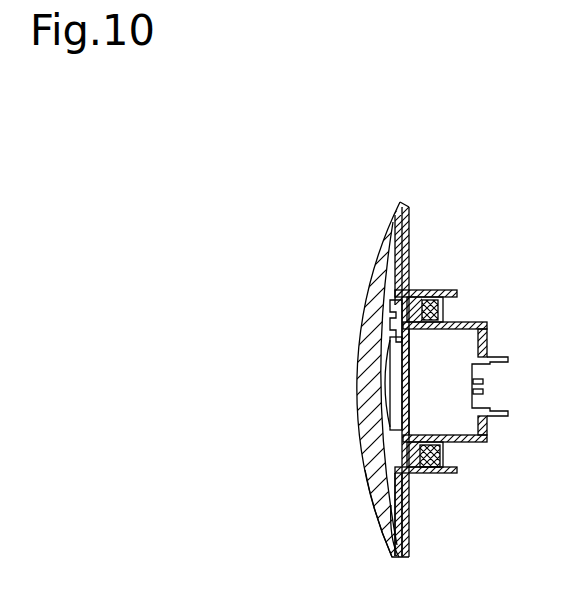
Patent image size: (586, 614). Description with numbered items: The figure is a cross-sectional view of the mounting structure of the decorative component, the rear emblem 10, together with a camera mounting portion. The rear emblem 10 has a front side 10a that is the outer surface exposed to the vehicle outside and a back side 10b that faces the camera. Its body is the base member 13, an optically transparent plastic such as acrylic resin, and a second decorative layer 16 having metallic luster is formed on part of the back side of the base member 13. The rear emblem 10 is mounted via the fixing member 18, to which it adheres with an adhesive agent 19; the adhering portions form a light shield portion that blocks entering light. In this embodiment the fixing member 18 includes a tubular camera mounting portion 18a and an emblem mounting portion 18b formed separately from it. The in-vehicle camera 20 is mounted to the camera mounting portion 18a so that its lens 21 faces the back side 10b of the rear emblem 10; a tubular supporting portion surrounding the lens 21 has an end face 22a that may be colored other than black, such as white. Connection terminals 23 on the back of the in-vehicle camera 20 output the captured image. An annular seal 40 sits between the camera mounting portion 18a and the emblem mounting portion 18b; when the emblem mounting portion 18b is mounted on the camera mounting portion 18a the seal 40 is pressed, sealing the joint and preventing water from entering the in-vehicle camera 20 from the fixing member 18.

The rear emblem 10 is at (377, 379).
The front side 10a is at (362, 344).
The back side 10b is at (411, 250).
The base member 13 is at (369, 492).
The second decorative layer 16 is at (397, 540).
The fixing member 18 is at (476, 363).
The camera mounting portion 18a is at (465, 322).
The emblem mounting portion 18b is at (440, 297).
The adhesive agent 19 is at (396, 500).
The in-vehicle camera 20 is at (486, 342).
The lens 21 is at (382, 362).
The end face 22a is at (384, 422).
The connection terminals 23 is at (484, 391).
The seal 40 is at (440, 456).